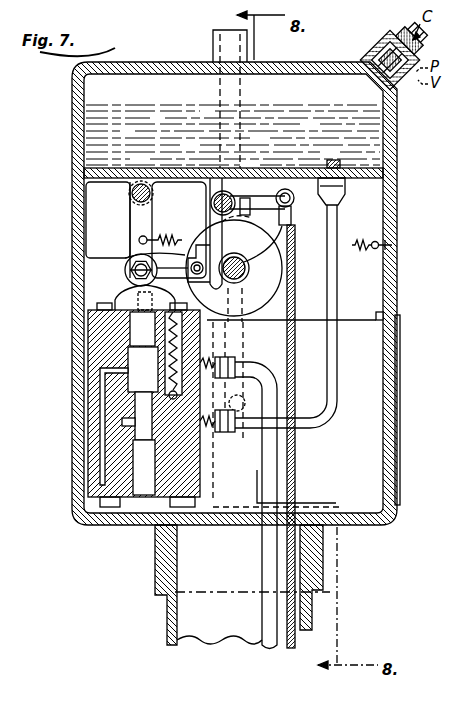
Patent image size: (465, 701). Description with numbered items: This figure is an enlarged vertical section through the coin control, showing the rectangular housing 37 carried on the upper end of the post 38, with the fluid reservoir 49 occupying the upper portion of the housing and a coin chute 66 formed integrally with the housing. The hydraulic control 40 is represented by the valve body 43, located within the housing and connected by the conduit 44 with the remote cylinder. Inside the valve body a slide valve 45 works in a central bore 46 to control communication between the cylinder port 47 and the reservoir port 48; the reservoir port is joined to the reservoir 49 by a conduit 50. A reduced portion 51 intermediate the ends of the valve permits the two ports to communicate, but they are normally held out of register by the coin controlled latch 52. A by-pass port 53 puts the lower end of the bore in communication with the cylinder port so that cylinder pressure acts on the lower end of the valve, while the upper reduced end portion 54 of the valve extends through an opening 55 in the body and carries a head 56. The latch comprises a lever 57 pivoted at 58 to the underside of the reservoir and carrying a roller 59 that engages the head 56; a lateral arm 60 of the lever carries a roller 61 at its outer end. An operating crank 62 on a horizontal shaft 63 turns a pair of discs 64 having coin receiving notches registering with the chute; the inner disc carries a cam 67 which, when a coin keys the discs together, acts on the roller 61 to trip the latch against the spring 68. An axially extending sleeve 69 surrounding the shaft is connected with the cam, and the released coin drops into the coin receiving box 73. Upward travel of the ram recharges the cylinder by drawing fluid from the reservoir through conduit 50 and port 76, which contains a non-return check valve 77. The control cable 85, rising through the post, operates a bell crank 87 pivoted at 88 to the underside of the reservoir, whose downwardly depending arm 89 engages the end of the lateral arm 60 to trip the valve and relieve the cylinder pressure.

The housing 37 is at (388, 199).
The post 38 is at (172, 625).
The hydraulic control 40 is at (279, 457).
The valve body 43 is at (95, 350).
The conduit 44 is at (270, 468).
The slide valve 45 is at (135, 363).
The central bore 46 is at (172, 393).
The cylinder port 47 is at (125, 372).
The reservoir port 48 is at (124, 424).
The reservoir 49 is at (110, 90).
The conduit 50 is at (332, 368).
The reduced portion 51 is at (143, 438).
The coin controlled latch 52 is at (130, 222).
The by-pass port 53 is at (103, 468).
The upper reduced end portion 54 is at (145, 333).
The opening 55 is at (143, 308).
The head 56 is at (133, 288).
The lever 57 is at (133, 213).
The pivot 58 is at (130, 192).
The roller 59 is at (125, 262).
The lateral arm 60 is at (189, 263).
The roller 61 is at (193, 244).
The operating crank 62 is at (242, 425).
The horizontal shaft 63 is at (275, 296).
The discs 64 is at (268, 288).
The coin chute 66 is at (242, 90).
The cam 67 is at (250, 272).
The spring 68 is at (363, 240).
The sleeve 69 is at (263, 252).
The coin receiving box 73 is at (365, 404).
The port 76 is at (168, 408).
The non-return check valve 77 is at (203, 397).
The control cable 85 is at (292, 488).
The bell crank 87 is at (266, 205).
The pivot 88 is at (214, 202).
The downwardly depending arm 89 is at (275, 236).